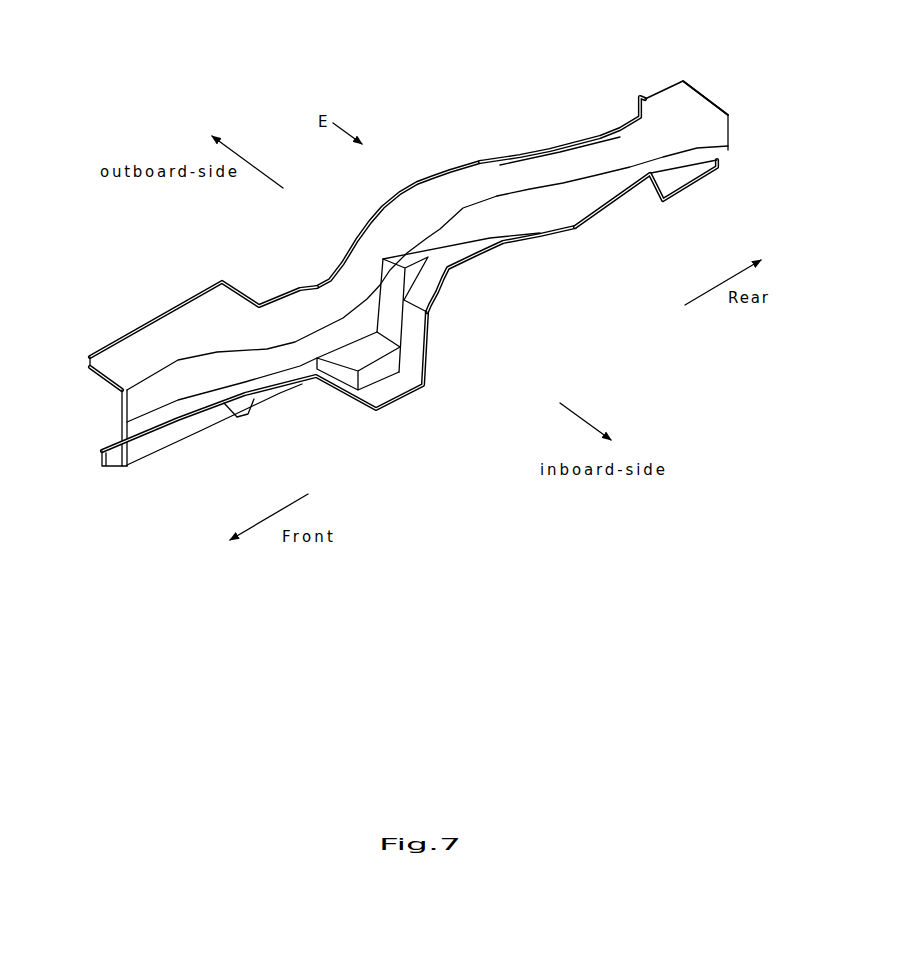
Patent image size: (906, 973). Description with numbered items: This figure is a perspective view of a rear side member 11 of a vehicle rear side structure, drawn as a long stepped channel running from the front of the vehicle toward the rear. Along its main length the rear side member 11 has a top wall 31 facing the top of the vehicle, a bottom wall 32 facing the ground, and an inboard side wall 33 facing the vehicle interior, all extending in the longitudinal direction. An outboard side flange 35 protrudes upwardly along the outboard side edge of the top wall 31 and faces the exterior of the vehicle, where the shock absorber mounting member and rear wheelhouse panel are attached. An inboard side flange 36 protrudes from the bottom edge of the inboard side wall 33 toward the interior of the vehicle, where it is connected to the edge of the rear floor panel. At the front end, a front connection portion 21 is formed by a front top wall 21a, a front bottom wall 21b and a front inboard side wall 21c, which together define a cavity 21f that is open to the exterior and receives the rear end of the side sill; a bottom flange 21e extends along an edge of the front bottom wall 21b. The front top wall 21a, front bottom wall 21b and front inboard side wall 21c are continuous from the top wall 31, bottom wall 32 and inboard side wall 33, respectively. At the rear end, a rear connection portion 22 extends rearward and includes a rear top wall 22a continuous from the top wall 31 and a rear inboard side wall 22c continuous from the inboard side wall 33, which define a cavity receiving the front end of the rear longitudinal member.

The rear side member 11 is at (422, 168).
The front connection portion 21 is at (138, 323).
The front top wall 21a is at (122, 370).
The front bottom wall 21b is at (113, 464).
The front inboard side wall 21c is at (165, 439).
The bottom flange 21e is at (105, 459).
The cavity 21f is at (109, 422).
The rear connection portion 22 is at (664, 73).
The rear top wall 22a is at (697, 107).
The rear inboard side wall 22c is at (720, 137).
The top wall 31 is at (540, 175).
The bottom wall 32 is at (488, 262).
The inboard side wall 33 is at (532, 213).
The outboard side flange 35 is at (500, 159).
The inboard side flange 36 is at (571, 231).